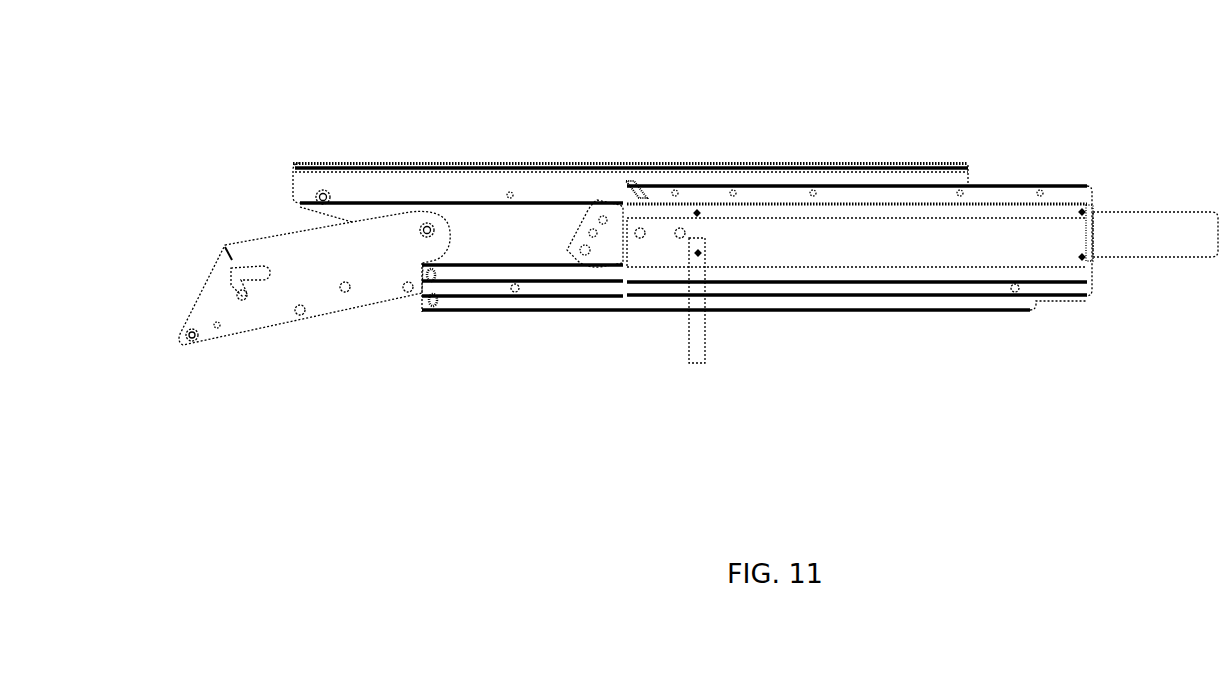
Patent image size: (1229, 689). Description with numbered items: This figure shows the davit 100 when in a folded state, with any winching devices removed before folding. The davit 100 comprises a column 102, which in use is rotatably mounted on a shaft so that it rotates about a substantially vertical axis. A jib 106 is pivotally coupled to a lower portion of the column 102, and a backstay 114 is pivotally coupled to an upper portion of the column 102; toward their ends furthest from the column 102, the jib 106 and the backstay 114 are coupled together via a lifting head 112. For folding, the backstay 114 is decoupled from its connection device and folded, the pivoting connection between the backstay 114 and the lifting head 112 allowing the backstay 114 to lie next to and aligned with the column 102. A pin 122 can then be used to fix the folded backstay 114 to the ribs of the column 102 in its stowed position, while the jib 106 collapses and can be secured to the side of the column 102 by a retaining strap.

The davit 100 is at (667, 233).
The column 102 is at (963, 238).
The jib 106 is at (526, 311).
The lifting head 112 is at (247, 235).
The backstay 114 is at (490, 167).
The pin 122 is at (630, 185).